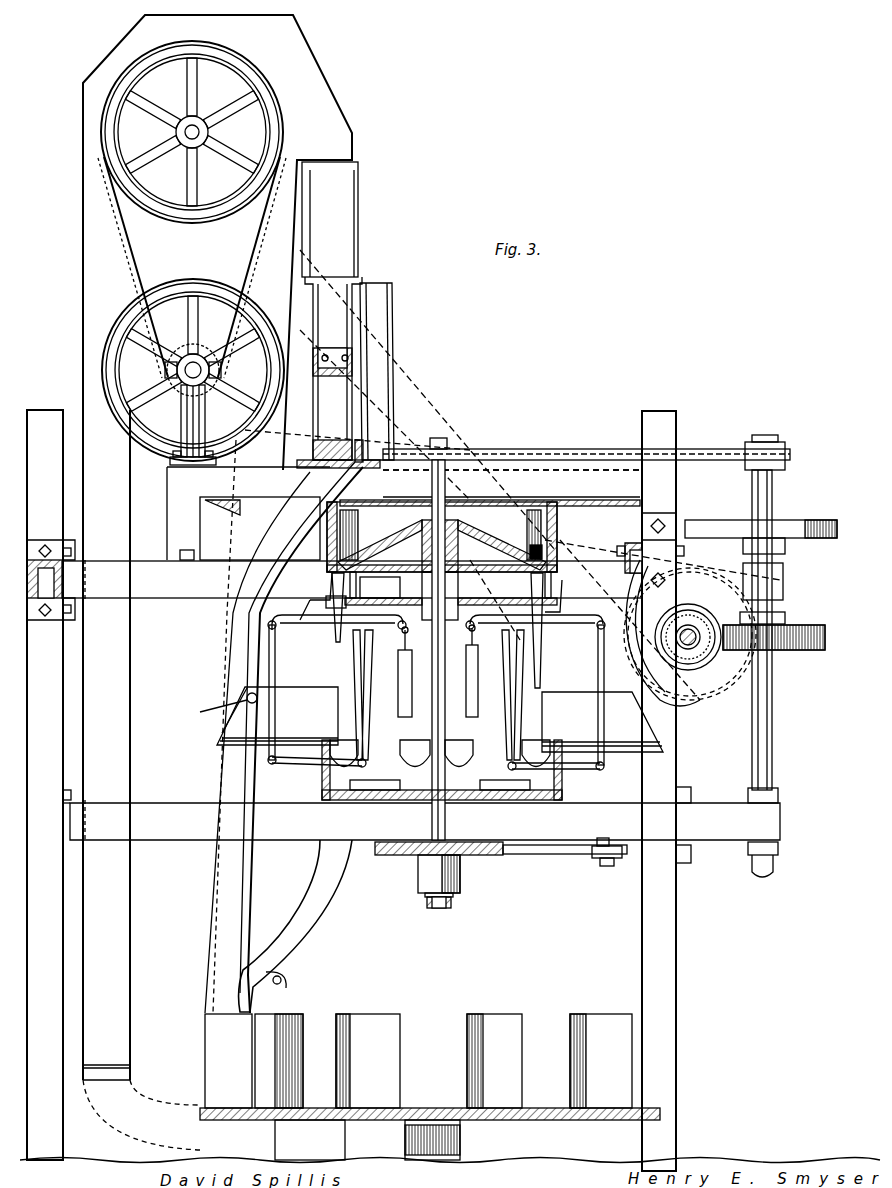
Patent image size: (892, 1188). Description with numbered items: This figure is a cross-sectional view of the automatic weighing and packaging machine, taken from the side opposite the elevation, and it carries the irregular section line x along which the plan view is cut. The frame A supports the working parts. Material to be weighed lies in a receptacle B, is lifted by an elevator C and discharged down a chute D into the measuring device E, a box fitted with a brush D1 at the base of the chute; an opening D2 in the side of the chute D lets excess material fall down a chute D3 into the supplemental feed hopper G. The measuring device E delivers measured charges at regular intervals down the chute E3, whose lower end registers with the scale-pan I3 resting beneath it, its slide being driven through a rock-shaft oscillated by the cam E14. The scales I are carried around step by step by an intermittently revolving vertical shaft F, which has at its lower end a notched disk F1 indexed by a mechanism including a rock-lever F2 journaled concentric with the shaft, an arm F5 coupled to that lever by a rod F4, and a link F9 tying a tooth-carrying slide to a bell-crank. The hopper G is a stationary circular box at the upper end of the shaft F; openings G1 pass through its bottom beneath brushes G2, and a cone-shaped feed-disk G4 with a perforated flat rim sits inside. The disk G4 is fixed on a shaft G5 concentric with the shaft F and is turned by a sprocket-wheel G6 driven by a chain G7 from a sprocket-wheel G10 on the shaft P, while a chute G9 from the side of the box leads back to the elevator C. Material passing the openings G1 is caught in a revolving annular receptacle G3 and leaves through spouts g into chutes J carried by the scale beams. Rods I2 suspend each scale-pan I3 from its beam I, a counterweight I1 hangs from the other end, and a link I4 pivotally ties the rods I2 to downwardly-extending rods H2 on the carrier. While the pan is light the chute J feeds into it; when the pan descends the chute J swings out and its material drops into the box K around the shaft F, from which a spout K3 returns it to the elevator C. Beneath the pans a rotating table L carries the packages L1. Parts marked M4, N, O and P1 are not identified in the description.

The frame A is at (421, 700).
The receptacle B is at (192, 596).
The elevator C is at (217, 582).
The chute D is at (330, 219).
The brush D1 is at (332, 362).
The opening D2 is at (362, 314).
The chute D3 is at (390, 322).
The measuring device E is at (320, 405).
The discharge chute E3 is at (318, 721).
The cam E14 is at (792, 538).
The vertical shaft F is at (438, 639).
The notched disk F1 is at (439, 838).
The rock-lever F2 is at (460, 874).
The link F9 is at (445, 910).
The rod F4 is at (566, 856).
The arm F5 is at (616, 862).
The supplemental feed hopper G is at (483, 545).
The openings G1 is at (379, 588).
The brushes G2 is at (351, 535).
The annular receptacle G3 is at (544, 556).
The feed-disk G4 is at (442, 540).
The shaft G5 is at (511, 495).
The sprocket-wheel G6 is at (511, 475).
The drive-chain G7 is at (586, 444).
The chute G9 is at (332, 594).
The sprocket-wheel G10 is at (777, 608).
The spouts g is at (431, 596).
The rods H2 is at (438, 695).
The scale I is at (436, 637).
The counterweight I1 is at (444, 671).
The hanger rods I2 is at (443, 695).
The scale-pan I3 is at (440, 719).
The link I4 is at (436, 778).
The chute J is at (435, 630).
The box K is at (450, 773).
The spout K3 is at (322, 903).
The rotating table L is at (450, 1119).
The packages L1 is at (418, 1061).
The lever arm M4 is at (218, 710).
The connecting link N is at (725, 690).
The gear wheel O is at (690, 650).
The shaft P is at (701, 791).
The worm P1 is at (800, 650).
The section line x is at (501, 539).